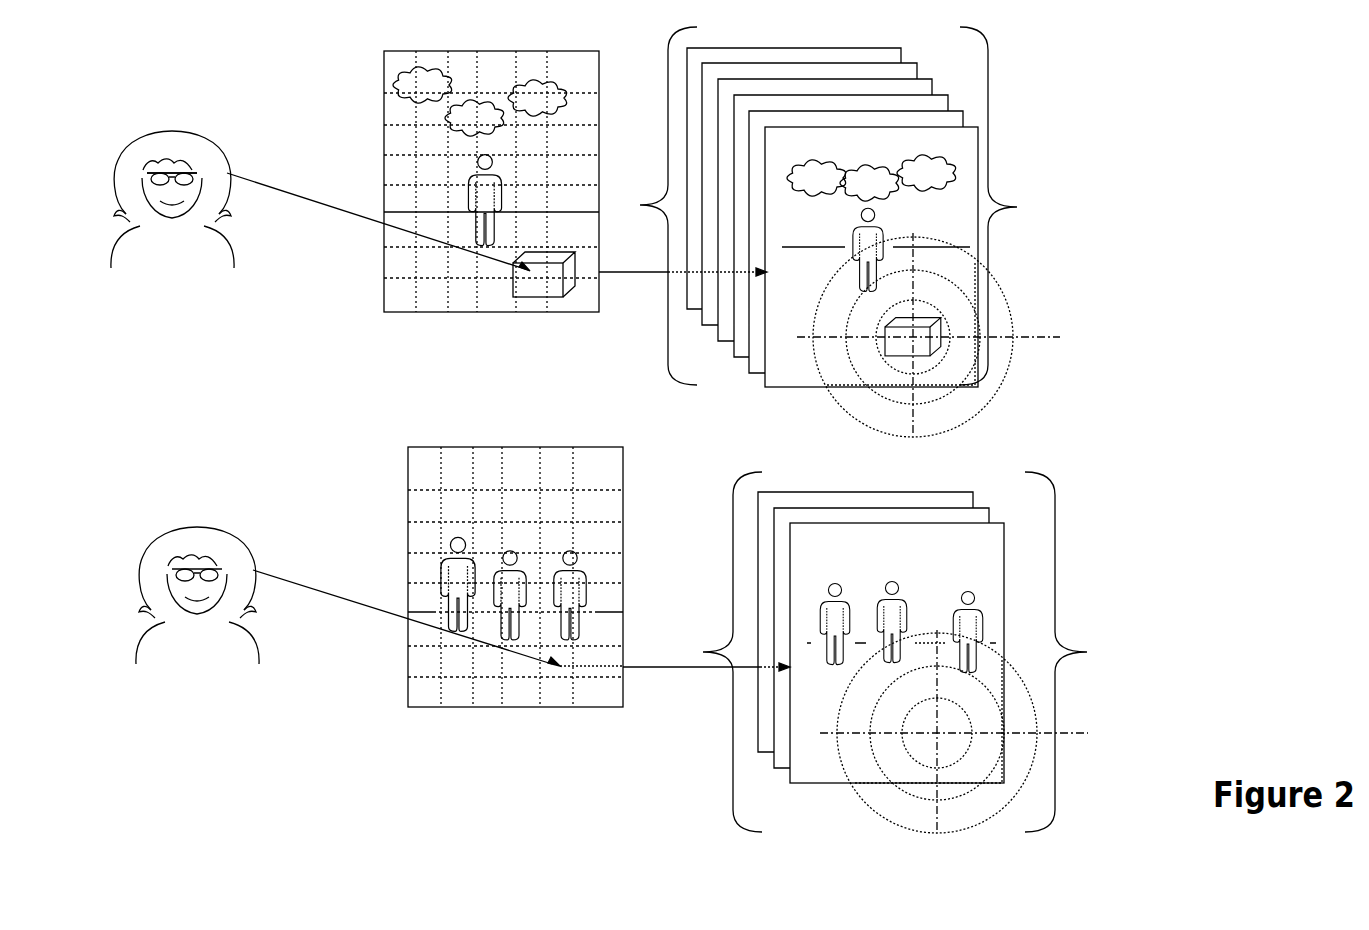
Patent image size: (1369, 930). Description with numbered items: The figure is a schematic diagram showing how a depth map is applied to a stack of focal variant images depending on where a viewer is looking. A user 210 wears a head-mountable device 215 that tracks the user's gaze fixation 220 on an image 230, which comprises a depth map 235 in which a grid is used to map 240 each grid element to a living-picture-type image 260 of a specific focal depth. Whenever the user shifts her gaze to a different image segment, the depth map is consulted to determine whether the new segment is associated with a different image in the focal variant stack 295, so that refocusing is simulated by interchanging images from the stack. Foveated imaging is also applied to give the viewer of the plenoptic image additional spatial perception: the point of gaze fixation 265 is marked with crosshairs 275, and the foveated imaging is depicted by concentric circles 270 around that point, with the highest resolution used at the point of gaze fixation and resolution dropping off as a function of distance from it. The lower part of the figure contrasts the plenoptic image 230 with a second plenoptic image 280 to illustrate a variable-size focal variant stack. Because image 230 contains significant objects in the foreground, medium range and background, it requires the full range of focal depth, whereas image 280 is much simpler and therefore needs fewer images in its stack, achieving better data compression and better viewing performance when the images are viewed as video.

The user 210 is at (175, 130).
The head-mountable device 215 is at (190, 172).
The gaze fixation 220 is at (293, 185).
The image 230 is at (405, 51).
The depth map 235 is at (545, 76).
The map 240 is at (610, 271).
The living picture-type image 260 is at (892, 48).
The point of gaze fixation 265 is at (920, 328).
The concentric circles 270 is at (994, 283).
The crosshairs 275 is at (1044, 336).
The plenoptic image 280 is at (540, 447).
The focal variant stack 295 is at (1060, 472).